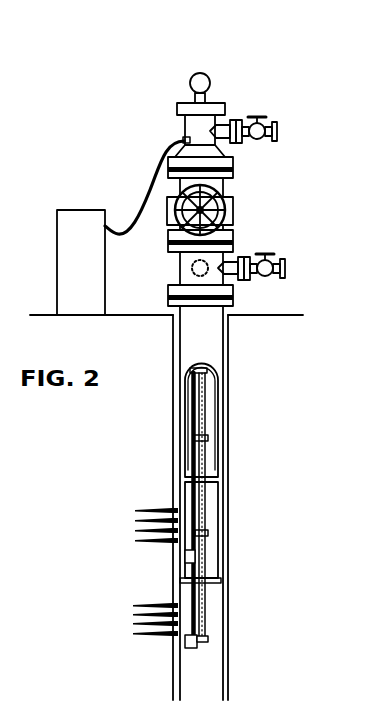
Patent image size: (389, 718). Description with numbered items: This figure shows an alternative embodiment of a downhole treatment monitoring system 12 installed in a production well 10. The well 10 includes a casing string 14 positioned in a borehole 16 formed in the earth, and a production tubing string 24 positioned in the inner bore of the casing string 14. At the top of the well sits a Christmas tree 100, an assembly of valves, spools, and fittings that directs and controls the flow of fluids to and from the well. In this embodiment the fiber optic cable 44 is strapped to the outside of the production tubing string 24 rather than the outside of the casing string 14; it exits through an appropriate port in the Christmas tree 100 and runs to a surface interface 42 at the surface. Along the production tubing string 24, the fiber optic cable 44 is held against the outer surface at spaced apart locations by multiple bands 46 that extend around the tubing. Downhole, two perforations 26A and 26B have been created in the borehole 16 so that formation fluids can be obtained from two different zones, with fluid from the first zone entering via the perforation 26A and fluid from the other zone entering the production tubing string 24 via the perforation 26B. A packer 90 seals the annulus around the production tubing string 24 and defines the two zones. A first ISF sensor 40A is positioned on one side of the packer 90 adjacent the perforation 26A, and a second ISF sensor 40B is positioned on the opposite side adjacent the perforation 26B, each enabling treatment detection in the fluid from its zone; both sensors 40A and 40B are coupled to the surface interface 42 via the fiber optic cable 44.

The production well 10 is at (237, 74).
The downhole treatment monitoring system 12 is at (99, 183).
The casing string 14 is at (226, 360).
The borehole 16 is at (149, 293).
The production tubing string 24 is at (207, 561).
The perforation 26A is at (123, 500).
The perforation 26B is at (126, 600).
The first ISF sensor 40A is at (185, 557).
The second ISF sensor 40B is at (185, 645).
The surface interface 42 is at (57, 285).
The fiber optic cable 44 is at (148, 192).
The bands 46 is at (206, 367).
The packer 90 is at (213, 584).
The Christmas tree 100 is at (298, 106).